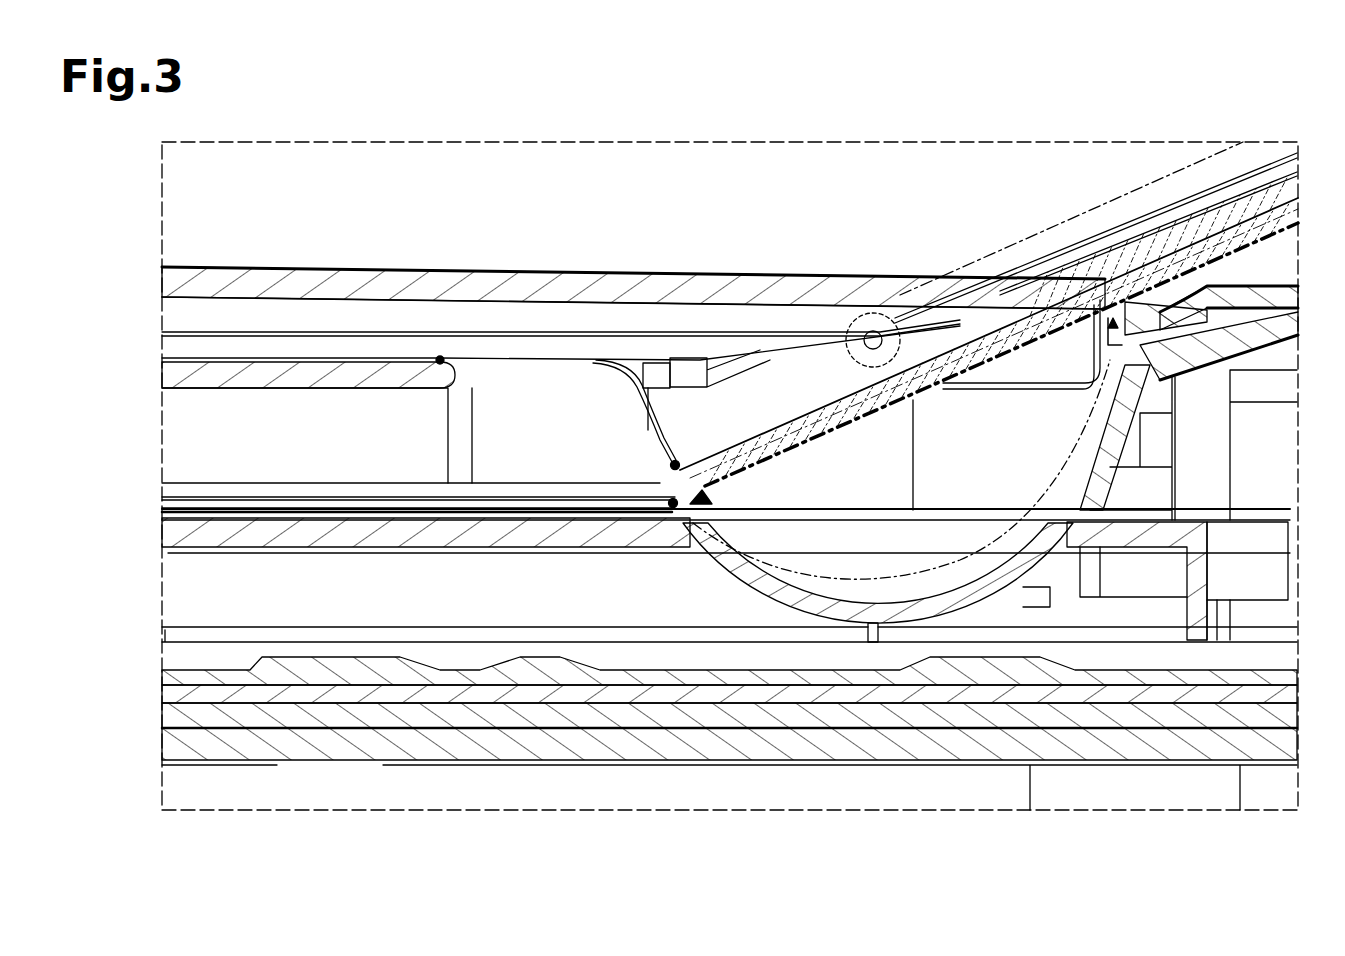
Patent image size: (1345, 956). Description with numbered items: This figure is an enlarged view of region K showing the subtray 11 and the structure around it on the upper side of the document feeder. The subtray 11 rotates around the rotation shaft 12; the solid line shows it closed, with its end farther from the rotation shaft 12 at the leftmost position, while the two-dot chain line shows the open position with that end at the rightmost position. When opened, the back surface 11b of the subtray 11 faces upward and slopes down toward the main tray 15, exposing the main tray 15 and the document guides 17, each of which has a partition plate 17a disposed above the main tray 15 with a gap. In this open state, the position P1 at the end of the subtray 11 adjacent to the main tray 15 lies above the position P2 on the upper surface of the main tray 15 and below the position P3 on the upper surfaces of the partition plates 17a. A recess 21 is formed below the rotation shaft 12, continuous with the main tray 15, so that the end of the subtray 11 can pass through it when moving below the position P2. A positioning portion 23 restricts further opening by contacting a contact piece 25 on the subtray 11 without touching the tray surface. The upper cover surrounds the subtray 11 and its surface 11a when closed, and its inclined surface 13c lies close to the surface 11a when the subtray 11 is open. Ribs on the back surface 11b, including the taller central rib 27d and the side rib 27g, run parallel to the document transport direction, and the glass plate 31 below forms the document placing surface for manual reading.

The region K is at (430, 142).
The subtray 11 is at (345, 267).
The surface of the subtray 11a is at (1262, 242).
The back surface of the subtray 11b is at (1140, 232).
The rotation shaft 12 is at (905, 320).
The inclined surface 13c is at (1190, 298).
The main tray 15 is at (488, 515).
The document guide 17 is at (205, 430).
The partition plate 17a is at (408, 358).
The recess 21 is at (905, 598).
The positioning portion 23 is at (663, 375).
The contact piece 25 is at (705, 350).
The rib 27d is at (1060, 226).
The rib 27g is at (1096, 240).
The glass plate 31 is at (345, 762).
The position at an end of the subtray P1 is at (668, 462).
The position on the upper surface of the main tray P2 is at (672, 515).
The position on the upper surfaces of the partition plates P3 is at (446, 355).